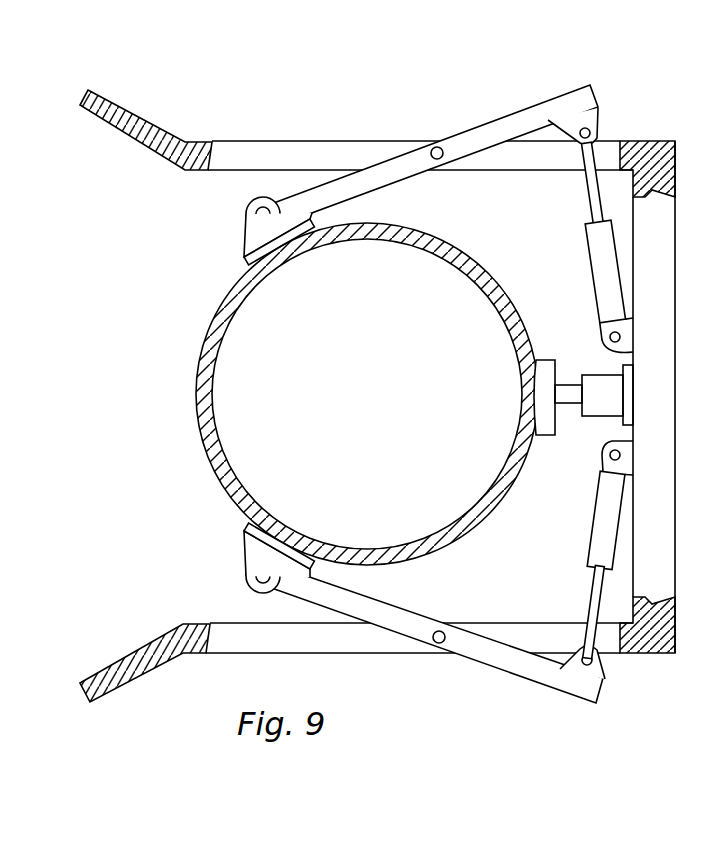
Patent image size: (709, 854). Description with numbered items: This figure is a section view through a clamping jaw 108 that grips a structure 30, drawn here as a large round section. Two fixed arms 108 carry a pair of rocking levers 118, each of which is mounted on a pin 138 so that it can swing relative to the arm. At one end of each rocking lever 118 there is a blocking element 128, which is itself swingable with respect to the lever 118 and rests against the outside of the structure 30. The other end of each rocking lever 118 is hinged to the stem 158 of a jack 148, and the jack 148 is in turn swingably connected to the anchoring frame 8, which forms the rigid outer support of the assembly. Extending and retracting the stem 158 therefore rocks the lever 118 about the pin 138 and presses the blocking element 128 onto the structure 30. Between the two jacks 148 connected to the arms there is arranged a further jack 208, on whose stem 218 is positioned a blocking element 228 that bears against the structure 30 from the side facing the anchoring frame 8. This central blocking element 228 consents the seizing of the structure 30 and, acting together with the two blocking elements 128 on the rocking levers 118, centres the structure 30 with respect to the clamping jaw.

The anchoring frame 8 is at (667, 308).
The structure 30 is at (231, 300).
The fixed arms 108 is at (178, 138).
The rocking levers 118 is at (524, 671).
The blocking element 128 is at (243, 537).
The pins 138 is at (442, 630).
The jack 148 is at (602, 540).
The stem 158 is at (593, 595).
The jack 208 is at (602, 412).
The shaft 218 is at (570, 404).
The blocking element 228 is at (544, 370).